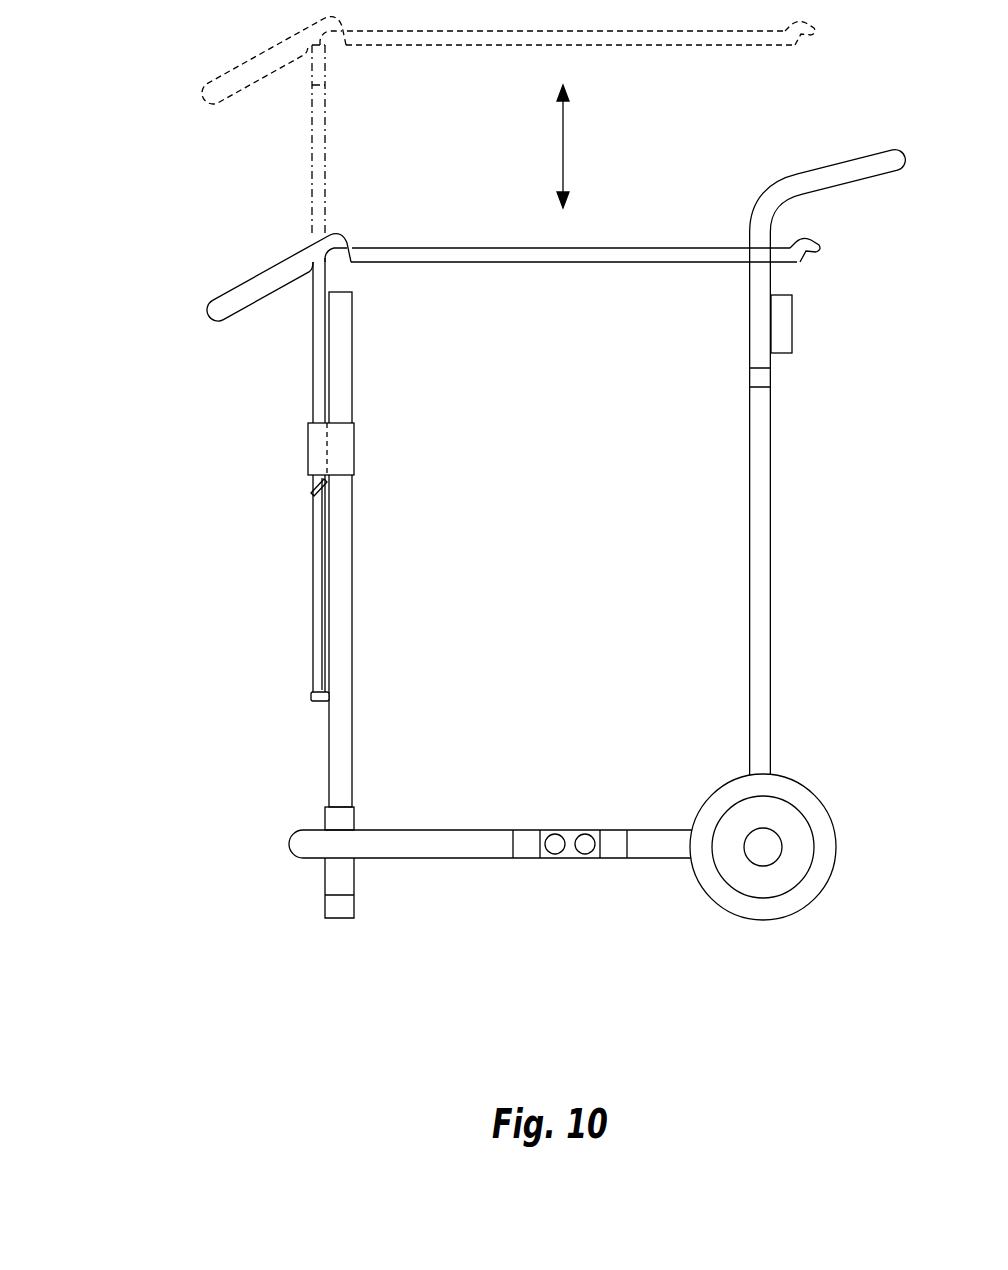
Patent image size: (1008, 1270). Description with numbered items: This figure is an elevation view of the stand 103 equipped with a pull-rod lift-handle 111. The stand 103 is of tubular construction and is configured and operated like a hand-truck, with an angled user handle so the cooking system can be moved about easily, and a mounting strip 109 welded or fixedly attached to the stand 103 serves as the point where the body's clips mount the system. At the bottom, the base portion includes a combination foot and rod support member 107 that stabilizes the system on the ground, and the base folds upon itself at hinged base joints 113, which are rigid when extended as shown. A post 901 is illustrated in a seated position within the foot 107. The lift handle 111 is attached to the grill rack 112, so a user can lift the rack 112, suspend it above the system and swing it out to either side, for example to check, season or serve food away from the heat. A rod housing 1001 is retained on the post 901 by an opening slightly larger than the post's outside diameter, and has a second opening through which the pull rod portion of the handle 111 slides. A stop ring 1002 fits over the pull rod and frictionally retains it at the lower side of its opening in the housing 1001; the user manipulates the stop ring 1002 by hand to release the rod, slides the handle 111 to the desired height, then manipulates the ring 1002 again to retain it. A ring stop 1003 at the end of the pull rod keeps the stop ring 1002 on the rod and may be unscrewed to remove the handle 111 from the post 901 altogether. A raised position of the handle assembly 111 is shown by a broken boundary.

The stand 103 is at (771, 598).
The combination foot and rod support member 107 is at (325, 878).
The mounting strip 109 is at (793, 333).
The pull-rod lift-handle 111 is at (252, 270).
The grill rack 112 is at (577, 262).
The hinged base joint 113 is at (569, 858).
The post 901 is at (352, 545).
The rod housing 1001 is at (308, 452).
The stop ring 1002 is at (312, 488).
The ring stop 1003 is at (312, 697).